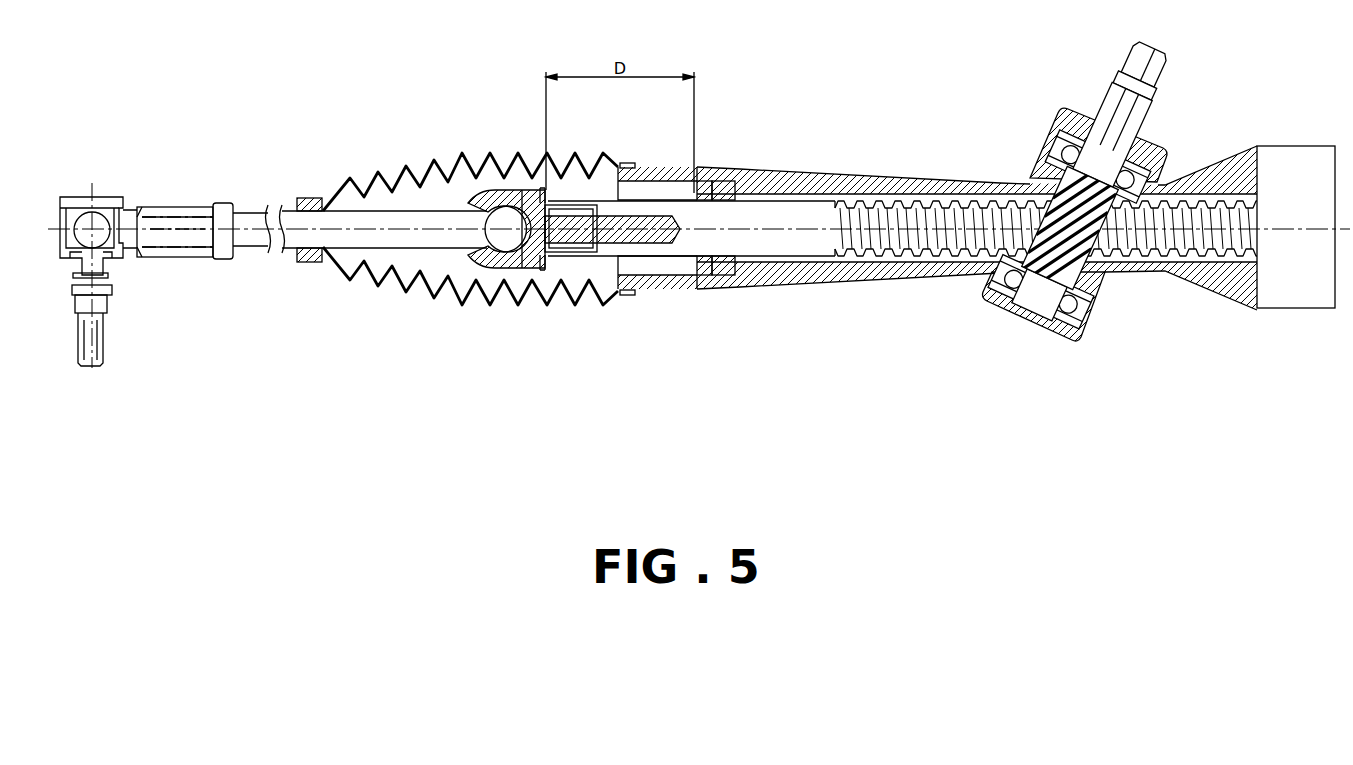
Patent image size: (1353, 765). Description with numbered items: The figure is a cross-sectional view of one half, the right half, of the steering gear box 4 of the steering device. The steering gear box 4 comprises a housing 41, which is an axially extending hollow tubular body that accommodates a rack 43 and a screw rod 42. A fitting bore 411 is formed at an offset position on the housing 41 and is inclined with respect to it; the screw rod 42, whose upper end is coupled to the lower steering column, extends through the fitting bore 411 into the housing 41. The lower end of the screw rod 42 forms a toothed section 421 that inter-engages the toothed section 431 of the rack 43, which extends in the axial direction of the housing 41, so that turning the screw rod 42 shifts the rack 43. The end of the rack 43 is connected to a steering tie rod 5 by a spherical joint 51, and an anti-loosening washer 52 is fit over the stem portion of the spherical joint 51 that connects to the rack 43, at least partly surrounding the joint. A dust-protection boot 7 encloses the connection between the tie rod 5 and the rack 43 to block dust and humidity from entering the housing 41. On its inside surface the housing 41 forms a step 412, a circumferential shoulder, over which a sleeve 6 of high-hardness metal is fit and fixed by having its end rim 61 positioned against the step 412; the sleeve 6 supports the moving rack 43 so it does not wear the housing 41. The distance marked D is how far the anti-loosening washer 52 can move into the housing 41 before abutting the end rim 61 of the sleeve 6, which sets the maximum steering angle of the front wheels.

The steering gear box 4 is at (941, 199).
The steering tie rod 5 is at (253, 212).
The sleeve 6 is at (720, 181).
The dust-protection boot 7 is at (423, 290).
The housing 41 is at (902, 190).
The screw rod 42 is at (1113, 107).
The rack 43 is at (787, 215).
The spherical joint 51 is at (492, 186).
The anti-loosening washer 52 is at (545, 186).
The end rim 61 is at (698, 186).
The fitting bore 411 is at (1152, 140).
The step 412 is at (695, 278).
The toothed section of screw rod 421 is at (1070, 267).
The toothed section of rack 431 is at (922, 247).